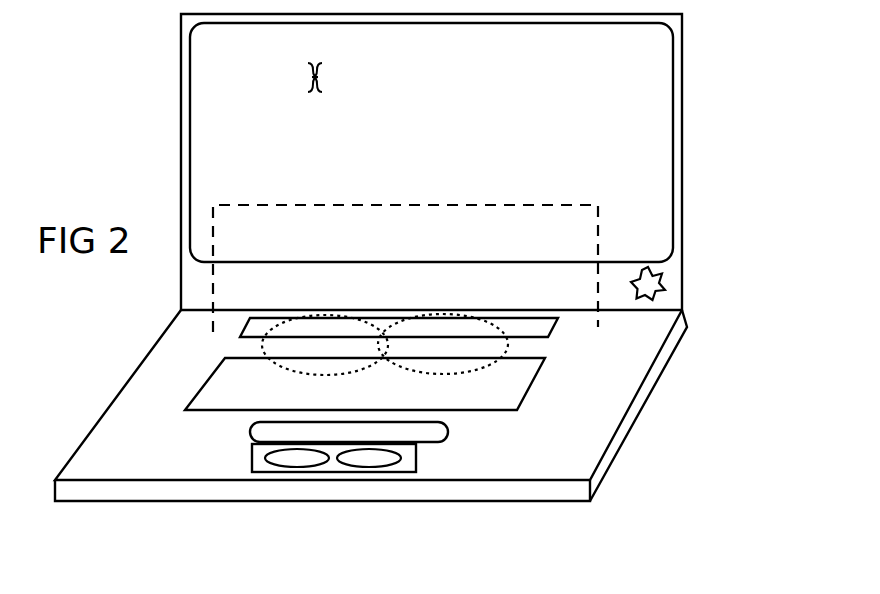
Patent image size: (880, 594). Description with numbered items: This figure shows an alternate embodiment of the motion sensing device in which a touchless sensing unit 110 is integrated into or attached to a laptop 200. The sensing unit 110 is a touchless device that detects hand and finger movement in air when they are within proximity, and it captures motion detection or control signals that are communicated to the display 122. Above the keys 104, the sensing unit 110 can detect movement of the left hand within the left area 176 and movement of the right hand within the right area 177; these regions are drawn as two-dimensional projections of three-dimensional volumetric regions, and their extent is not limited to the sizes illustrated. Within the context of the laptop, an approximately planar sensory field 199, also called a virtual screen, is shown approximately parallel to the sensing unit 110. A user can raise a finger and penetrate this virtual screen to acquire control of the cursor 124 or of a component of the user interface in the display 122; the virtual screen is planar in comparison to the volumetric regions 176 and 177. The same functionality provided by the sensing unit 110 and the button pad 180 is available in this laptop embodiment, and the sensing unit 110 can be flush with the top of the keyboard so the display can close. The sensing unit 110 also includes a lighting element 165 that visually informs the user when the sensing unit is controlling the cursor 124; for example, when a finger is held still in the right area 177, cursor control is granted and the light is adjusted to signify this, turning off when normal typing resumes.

The laptop 200 is at (757, 143).
The display 122 is at (210, 102).
The cursor 124 is at (318, 112).
The approximately planar sensory field 199 is at (486, 200).
The lighting element 165 is at (663, 272).
The sensing unit 110 is at (550, 330).
The left area 176 is at (362, 373).
The right area 177 is at (410, 372).
The keys 104 is at (528, 388).
The button pad 180 is at (418, 458).